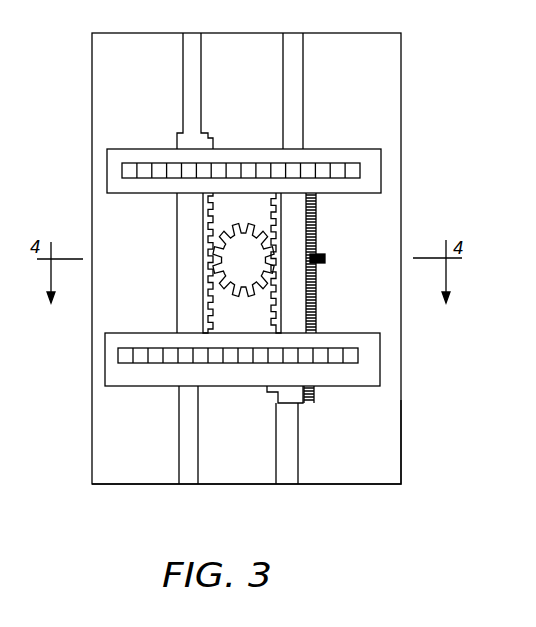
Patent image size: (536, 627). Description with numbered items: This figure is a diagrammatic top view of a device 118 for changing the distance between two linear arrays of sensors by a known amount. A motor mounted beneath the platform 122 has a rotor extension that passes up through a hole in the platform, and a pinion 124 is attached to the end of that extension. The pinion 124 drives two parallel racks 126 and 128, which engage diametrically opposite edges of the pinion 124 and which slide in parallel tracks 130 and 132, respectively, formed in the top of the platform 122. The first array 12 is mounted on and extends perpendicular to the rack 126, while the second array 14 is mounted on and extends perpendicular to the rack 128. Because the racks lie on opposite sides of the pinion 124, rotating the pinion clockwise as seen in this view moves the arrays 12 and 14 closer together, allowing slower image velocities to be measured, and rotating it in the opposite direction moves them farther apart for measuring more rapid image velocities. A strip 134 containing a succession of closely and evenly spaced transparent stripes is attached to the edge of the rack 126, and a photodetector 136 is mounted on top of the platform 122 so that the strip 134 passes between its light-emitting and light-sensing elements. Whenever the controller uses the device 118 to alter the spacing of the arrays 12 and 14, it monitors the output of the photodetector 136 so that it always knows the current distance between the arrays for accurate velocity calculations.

The first array 12 is at (348, 163).
The second array 14 is at (355, 333).
The device 118 is at (423, 203).
The platform 122 is at (388, 443).
The pinion 124 is at (244, 296).
The rack 126 is at (292, 219).
The rack 128 is at (185, 248).
The track 130 is at (297, 47).
The track 132 is at (193, 48).
The strip 134 is at (316, 305).
The photodetector 136 is at (325, 258).